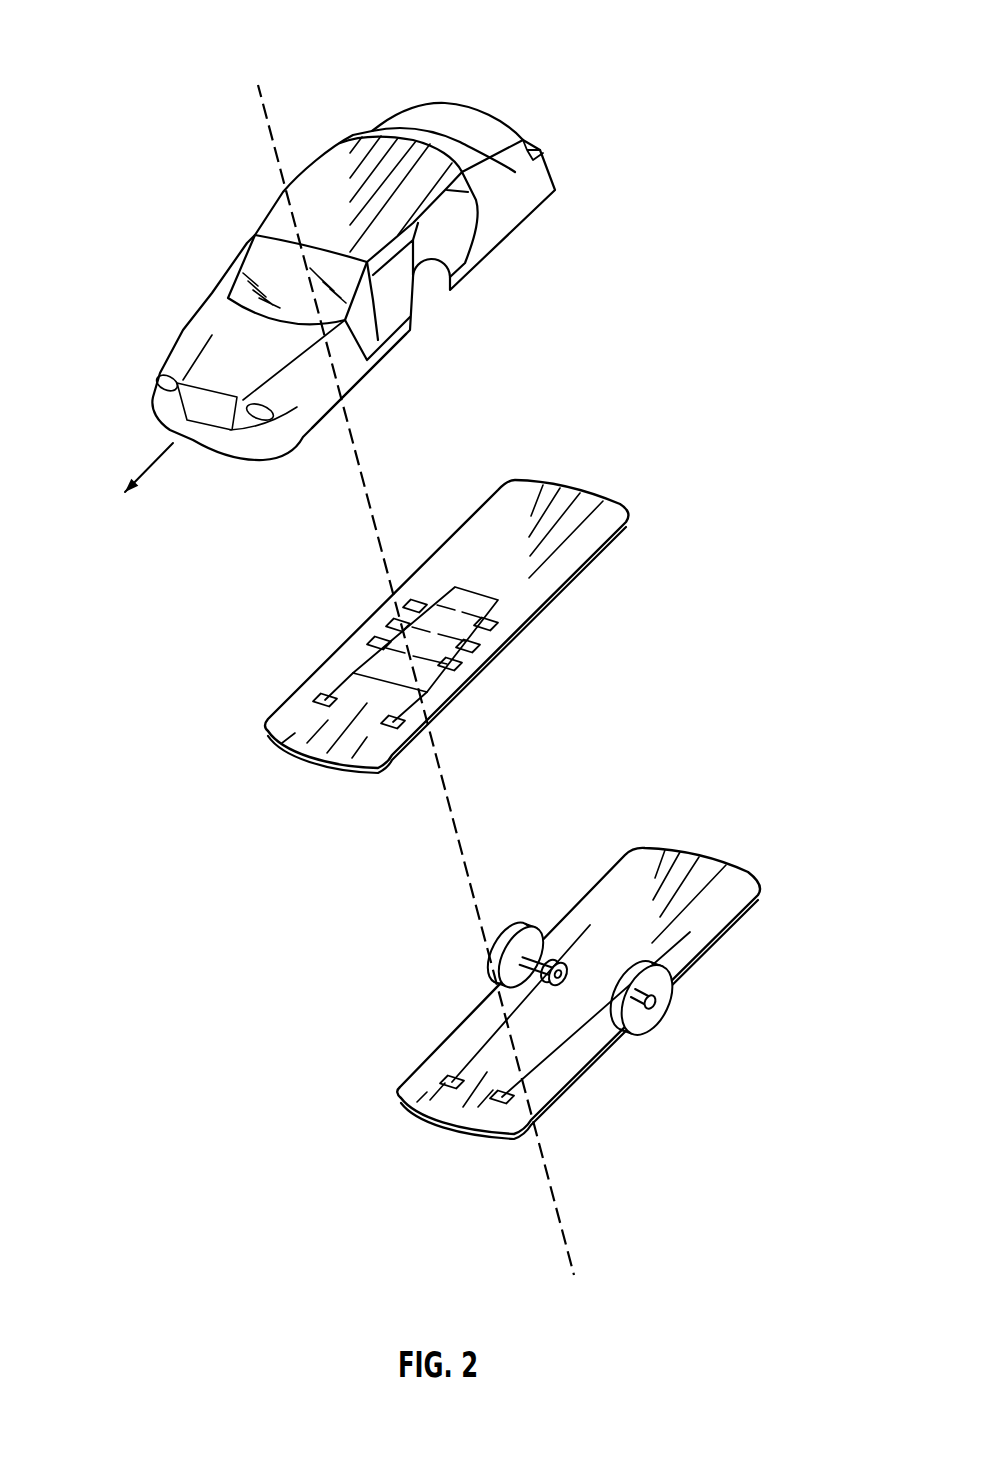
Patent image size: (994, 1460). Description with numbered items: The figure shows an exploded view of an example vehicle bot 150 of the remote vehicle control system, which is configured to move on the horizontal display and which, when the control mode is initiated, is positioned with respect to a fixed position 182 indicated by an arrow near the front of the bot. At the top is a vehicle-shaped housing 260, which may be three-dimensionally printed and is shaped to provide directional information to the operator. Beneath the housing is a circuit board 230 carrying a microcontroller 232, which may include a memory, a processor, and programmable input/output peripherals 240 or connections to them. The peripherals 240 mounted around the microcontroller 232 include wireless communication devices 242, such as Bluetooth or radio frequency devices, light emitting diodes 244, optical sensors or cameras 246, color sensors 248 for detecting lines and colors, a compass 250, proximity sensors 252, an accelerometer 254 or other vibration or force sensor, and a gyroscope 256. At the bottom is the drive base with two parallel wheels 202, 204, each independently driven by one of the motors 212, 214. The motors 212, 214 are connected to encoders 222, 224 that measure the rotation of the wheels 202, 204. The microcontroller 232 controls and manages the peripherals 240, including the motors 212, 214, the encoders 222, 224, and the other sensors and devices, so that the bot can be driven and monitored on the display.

The vehicle bot 150 is at (388, 232).
The fixed position 182 is at (152, 462).
The vehicle-shaped housing 260 is at (548, 170).
The circuit board 230 is at (591, 470).
The programmable input/output peripherals 240 is at (357, 644).
The microcontroller 232 is at (483, 596).
The wireless communication devices 242 is at (316, 700).
The light emitting diodes 244 is at (374, 641).
The optical sensors or cameras 246 is at (397, 618).
The color sensors 248 is at (417, 597).
The compass 250 is at (395, 730).
The proximity sensors 252 is at (452, 670).
The accelerometer 254 is at (474, 650).
The gyroscope 256 is at (492, 622).
The parallel wheel 202 is at (471, 934).
The parallel wheel 204 is at (649, 1004).
The motor 212 is at (552, 935).
The motor 214 is at (620, 972).
The encoder 222 is at (442, 1087).
The encoder 224 is at (497, 1104).